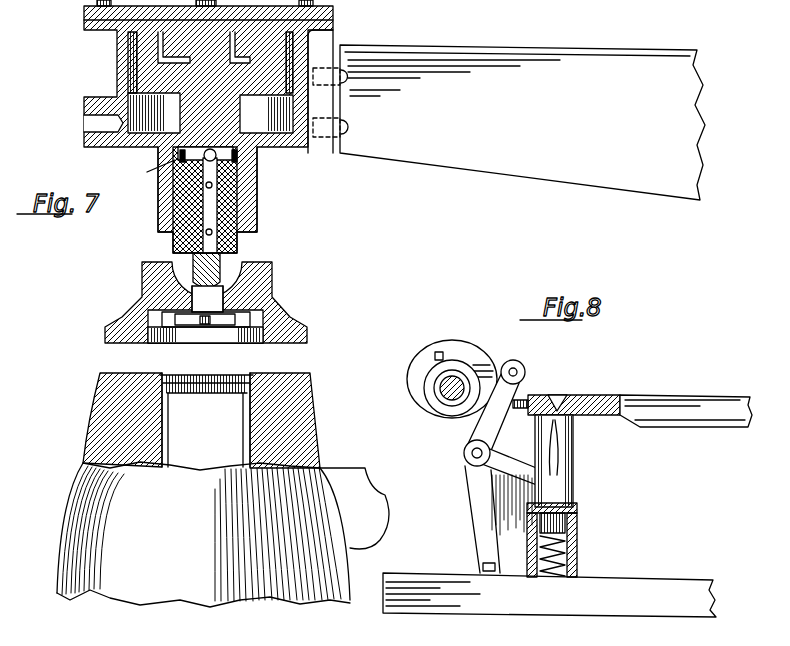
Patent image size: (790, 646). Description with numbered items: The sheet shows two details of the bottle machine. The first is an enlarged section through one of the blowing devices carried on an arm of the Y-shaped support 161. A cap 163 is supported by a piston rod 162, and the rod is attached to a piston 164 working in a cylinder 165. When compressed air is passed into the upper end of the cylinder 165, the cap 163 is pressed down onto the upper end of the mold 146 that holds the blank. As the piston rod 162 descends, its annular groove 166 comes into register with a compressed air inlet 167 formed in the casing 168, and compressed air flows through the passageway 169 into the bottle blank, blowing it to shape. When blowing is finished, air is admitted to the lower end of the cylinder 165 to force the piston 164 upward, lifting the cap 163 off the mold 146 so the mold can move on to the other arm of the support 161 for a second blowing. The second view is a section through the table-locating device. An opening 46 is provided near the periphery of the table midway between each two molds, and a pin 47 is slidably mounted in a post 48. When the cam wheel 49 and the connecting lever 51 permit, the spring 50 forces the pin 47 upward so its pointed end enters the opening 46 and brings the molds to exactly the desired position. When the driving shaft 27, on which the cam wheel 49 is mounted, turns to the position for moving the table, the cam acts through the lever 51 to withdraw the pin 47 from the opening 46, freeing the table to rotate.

In FIG. 8, the driving shaft 27 is at (452, 403).
In FIG. 8, the opening 46 is at (560, 397).
In FIG. 8, the pin 47 is at (562, 443).
In FIG. 8, the post 48 is at (577, 508).
In FIG. 8, the cam wheel 49 is at (465, 352).
In FIG. 8, the spring 50 is at (573, 548).
In FIG. 8, the connecting lever 51 is at (513, 398).
In FIG. 7, the mold 146 is at (303, 402).
In FIG. 7, the Y-shaped support 161 is at (253, 340).
In FIG. 7, the piston rod 162 is at (223, 187).
In FIG. 7, the cap 163 is at (283, 320).
In FIG. 7, the piston 164 is at (312, 50).
In FIG. 7, the cylinder 165 is at (117, 72).
In FIG. 7, the annular groove 166 is at (145, 172).
In FIG. 7, the compressed air inlet 167 is at (257, 205).
In FIG. 7, the casing 168 is at (257, 173).
In FIG. 7, the passageway 169 is at (210, 236).